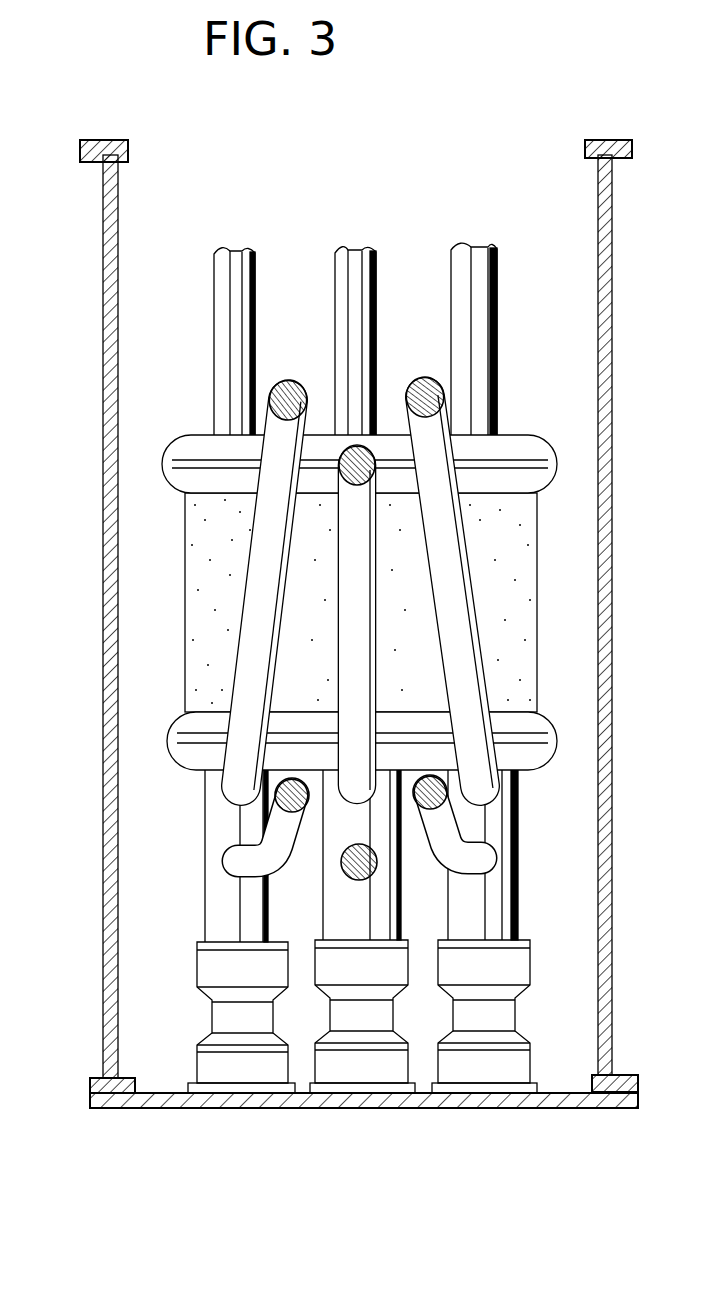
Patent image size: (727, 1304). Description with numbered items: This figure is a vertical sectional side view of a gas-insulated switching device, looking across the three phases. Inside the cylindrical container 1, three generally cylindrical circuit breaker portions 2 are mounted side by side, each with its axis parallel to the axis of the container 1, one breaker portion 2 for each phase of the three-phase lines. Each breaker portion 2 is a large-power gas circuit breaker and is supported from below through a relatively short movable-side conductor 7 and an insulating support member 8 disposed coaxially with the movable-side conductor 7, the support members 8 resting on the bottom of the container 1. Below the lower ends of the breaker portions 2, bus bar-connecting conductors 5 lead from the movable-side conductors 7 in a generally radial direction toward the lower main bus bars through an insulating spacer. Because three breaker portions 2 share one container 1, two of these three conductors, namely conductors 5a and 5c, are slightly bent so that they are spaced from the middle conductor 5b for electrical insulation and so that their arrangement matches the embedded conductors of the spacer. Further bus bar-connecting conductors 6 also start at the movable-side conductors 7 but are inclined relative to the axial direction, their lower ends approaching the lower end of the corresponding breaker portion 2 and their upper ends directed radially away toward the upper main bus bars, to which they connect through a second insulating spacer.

The cylindrical container 1 is at (103, 290).
The circuit breaker portion 2 is at (185, 530).
The bus bar-connecting conductor 5 is at (305, 857).
The bus bar-connecting conductor 5a is at (468, 876).
The bus bar-connecting conductor 5b is at (343, 872).
The bus bar-connecting conductor 5c is at (242, 882).
The bus bar-connecting conductor 6 is at (243, 613).
The movable-side conductor 7 is at (205, 826).
The insulating support member 8 is at (213, 1015).